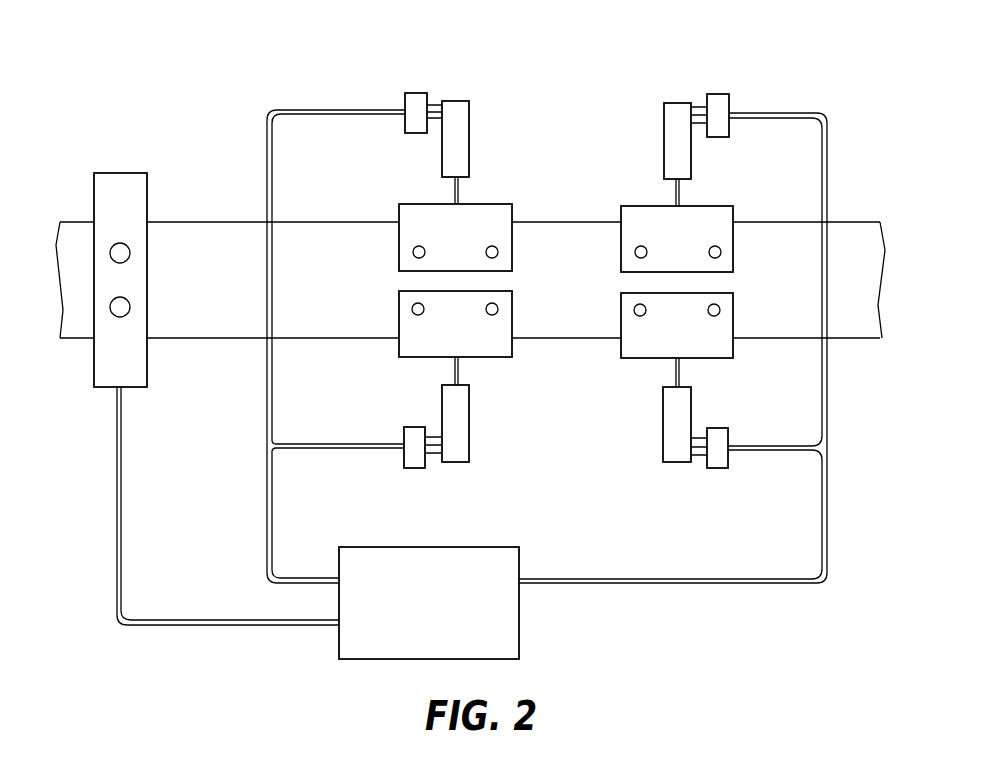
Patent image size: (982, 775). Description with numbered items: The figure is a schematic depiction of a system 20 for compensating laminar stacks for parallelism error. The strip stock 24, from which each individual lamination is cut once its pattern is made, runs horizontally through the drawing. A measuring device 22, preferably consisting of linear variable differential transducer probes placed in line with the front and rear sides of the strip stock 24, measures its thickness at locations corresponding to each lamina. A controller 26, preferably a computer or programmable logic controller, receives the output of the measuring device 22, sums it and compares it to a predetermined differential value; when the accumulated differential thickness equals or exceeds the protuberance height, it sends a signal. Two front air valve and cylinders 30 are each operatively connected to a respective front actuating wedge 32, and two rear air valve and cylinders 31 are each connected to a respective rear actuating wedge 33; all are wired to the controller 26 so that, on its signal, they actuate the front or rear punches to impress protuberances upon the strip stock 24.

The system 20 is at (766, 54).
The measuring device 22 is at (103, 198).
The strip stock 24 is at (190, 227).
The controller 26 is at (519, 637).
The front air valve and cylinders 30 is at (470, 430).
The rear air valve and cylinders 31 is at (457, 107).
The front actuating wedge 32 is at (490, 350).
The rear actuating wedge 33 is at (485, 208).